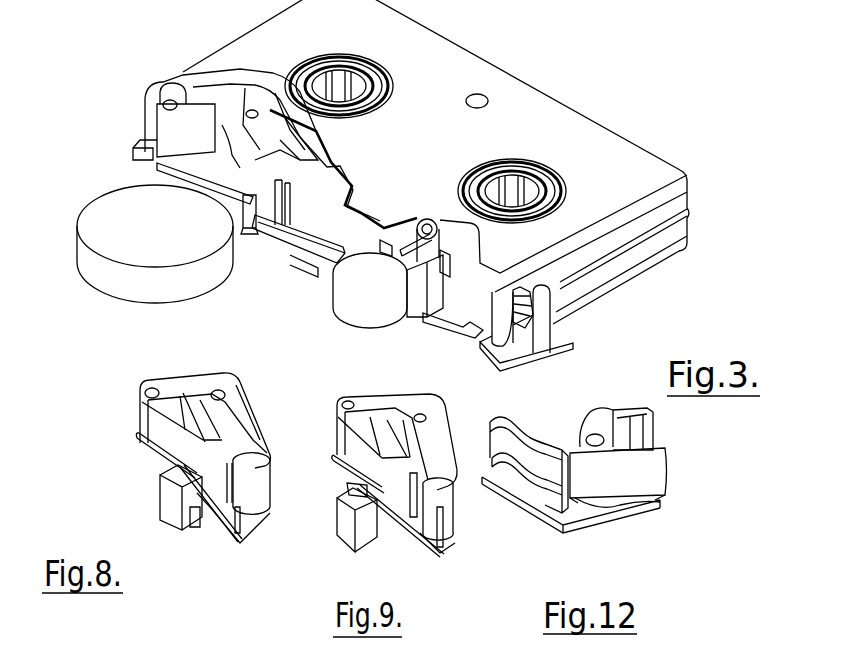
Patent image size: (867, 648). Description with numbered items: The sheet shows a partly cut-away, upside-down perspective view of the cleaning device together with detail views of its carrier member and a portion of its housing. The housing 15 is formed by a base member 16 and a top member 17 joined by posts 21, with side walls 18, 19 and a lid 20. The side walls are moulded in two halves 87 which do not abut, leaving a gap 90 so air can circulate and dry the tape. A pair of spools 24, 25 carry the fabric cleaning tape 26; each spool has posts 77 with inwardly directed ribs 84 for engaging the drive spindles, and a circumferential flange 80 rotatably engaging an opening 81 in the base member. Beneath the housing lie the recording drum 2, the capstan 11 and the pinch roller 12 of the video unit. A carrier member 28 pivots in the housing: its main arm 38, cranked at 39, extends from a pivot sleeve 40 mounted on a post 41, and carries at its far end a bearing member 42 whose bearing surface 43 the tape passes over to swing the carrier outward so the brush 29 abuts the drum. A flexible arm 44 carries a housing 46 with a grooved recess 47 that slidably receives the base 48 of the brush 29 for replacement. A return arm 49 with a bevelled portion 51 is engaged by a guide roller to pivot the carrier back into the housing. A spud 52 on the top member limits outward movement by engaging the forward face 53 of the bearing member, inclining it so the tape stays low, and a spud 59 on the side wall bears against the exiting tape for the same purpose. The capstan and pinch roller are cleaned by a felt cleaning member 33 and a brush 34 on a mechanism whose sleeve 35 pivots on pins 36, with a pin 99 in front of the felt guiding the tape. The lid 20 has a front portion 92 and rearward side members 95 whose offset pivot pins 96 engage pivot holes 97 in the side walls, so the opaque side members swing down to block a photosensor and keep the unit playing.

In FIG. 3, the recording drum 2 is at (156, 290).
In FIG. 3, the capstan 11 is at (387, 228).
In FIG. 3, the pinch roller 12 is at (366, 318).
In FIG. 3, the housing 15 is at (513, 46).
In FIG. 3, the base member 16 is at (545, 108).
In FIG. 3, the top member 17 is at (378, 205).
In FIG. 12, the top member 17 is at (640, 518).
In FIG. 3, the side wall 18 is at (694, 248).
In FIG. 12, the side wall 19 is at (522, 480).
In FIG. 3, the lid 20 is at (318, 292).
In FIG. 3, the post 21 is at (495, 330).
In FIG. 3, the spool 24 is at (385, 83).
In FIG. 3, the spool 25 is at (556, 175).
In FIG. 8, the cleaning tape 26 is at (137, 440).
In FIG. 9, the cleaning tape 26 is at (340, 440).
In FIG. 12, the cleaning tape 26 is at (668, 497).
In FIG. 3, the carrier member 28 is at (207, 83).
In FIG. 8, the carrier member 28 is at (191, 368).
In FIG. 9, the carrier member 28 is at (352, 395).
In FIG. 12, the carrier member 28 is at (612, 420).
In FIG. 3, the brush 29 is at (150, 176).
In FIG. 8, the brush 29 is at (180, 530).
In FIG. 9, the brush 29 is at (345, 552).
In FIG. 3, the felt cleaning member 33 is at (398, 225).
In FIG. 3, the brush 34 is at (417, 318).
In FIG. 3, the sleeve 35 is at (437, 248).
In FIG. 3, the pin 36 is at (430, 218).
In FIG. 3, the main arm 38 is at (277, 110).
In FIG. 8, the main arm 38 is at (248, 428).
In FIG. 8, the crank 39 is at (232, 385).
In FIG. 3, the pivot sleeve 40 is at (152, 105).
In FIG. 12, the pivot sleeve 40 is at (655, 482).
In FIG. 3, the post 41 is at (165, 98).
In FIG. 12, the post 41 is at (588, 430).
In FIG. 3, the bearing member 42 is at (270, 163).
In FIG. 8, the bearing member 42 is at (255, 452).
In FIG. 3, the bearing surface 43 is at (290, 196).
In FIG. 8, the bearing surface 43 is at (235, 478).
In FIG. 3, the flexible arm 44 is at (240, 120).
In FIG. 8, the flexible arm 44 is at (225, 405).
In FIG. 9, the flexible arm 44 is at (415, 420).
In FIG. 3, the housing 46 is at (250, 235).
In FIG. 8, the housing 46 is at (192, 530).
In FIG. 9, the housing 46 is at (380, 545).
In FIG. 8, the grooved recess 47 is at (165, 478).
In FIG. 9, the grooved recess 47 is at (350, 488).
In FIG. 9, the base 48 is at (345, 520).
In FIG. 8, the return arm 49 is at (185, 428).
In FIG. 9, the return arm 49 is at (400, 425).
In FIG. 3, the bevelled portion 51 is at (225, 146).
In FIG. 8, the spud 52 is at (232, 532).
In FIG. 9, the spud 52 is at (428, 552).
In FIG. 8, the forward face 53 is at (250, 495).
In FIG. 9, the forward face 53 is at (420, 520).
In FIG. 12, the spud 59 is at (573, 520).
In FIG. 3, the post 77 is at (326, 70).
In FIG. 3, the circumferential flange 80 is at (394, 91).
In FIG. 3, the opening 81 is at (387, 98).
In FIG. 3, the rib 84 is at (345, 75).
In FIG. 3, the side wall half 87 is at (690, 202).
In FIG. 12, the side wall half 87 is at (510, 430).
In FIG. 3, the gap 90 is at (690, 212).
In FIG. 12, the gap 90 is at (492, 448).
In FIG. 3, the front portion 92 is at (300, 245).
In FIG. 3, the side member 95 is at (543, 335).
In FIG. 3, the pivot pin 96 is at (533, 322).
In FIG. 12, the pivot hole 97 is at (545, 520).
In FIG. 3, the pin 99 is at (382, 243).